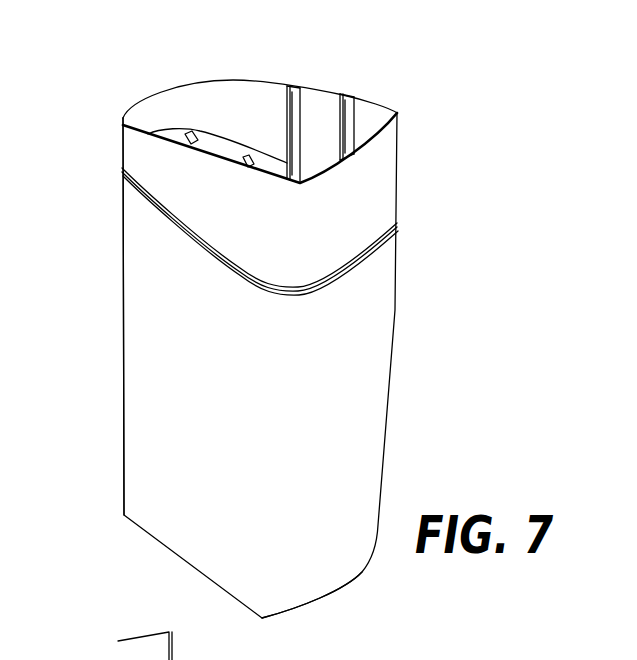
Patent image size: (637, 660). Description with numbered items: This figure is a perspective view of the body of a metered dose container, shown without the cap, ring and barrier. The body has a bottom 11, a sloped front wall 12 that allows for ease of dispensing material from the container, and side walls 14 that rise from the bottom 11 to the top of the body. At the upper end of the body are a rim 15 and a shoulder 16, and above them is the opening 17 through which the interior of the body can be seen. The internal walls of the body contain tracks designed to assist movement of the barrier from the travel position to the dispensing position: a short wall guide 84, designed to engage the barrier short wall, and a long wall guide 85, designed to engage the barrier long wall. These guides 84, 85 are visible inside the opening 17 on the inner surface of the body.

The bottom 11 is at (310, 607).
The front wall 12 is at (380, 387).
The side walls 14 is at (151, 342).
The rim 15 is at (397, 227).
The shoulder 16 is at (384, 171).
The opening 17 is at (227, 96).
The short wall guide 84 is at (299, 88).
The long wall guide 85 is at (357, 107).